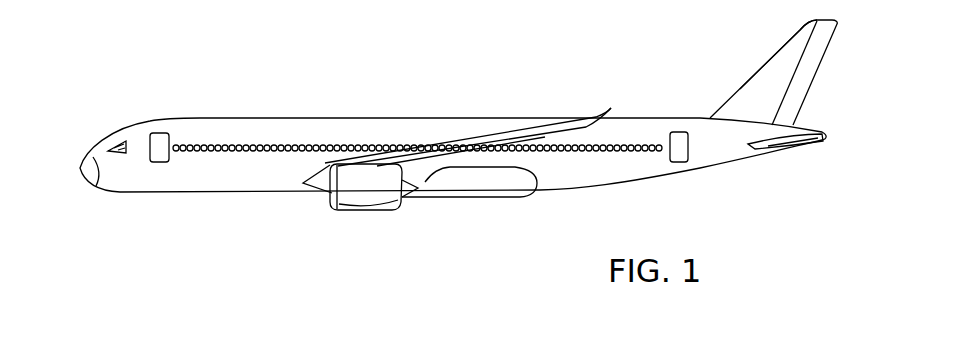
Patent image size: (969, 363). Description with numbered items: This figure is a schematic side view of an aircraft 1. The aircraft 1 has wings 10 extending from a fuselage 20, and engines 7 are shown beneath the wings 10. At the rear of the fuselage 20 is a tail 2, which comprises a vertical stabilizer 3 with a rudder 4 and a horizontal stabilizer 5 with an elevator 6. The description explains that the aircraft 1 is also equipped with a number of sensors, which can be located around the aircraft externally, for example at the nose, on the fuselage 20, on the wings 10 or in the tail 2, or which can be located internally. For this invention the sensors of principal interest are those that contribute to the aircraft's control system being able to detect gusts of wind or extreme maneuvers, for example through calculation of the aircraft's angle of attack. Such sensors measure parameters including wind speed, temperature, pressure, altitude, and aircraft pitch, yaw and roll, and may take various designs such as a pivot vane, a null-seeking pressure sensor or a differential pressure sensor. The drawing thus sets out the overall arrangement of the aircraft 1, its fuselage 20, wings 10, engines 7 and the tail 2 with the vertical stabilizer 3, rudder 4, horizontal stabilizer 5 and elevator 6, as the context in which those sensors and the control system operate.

The aircraft 1 is at (233, 117).
The tail 2 is at (765, 62).
The vertical stabilizer 3 is at (790, 42).
The rudder 4 is at (803, 77).
The horizontal stabilizer 5 is at (78, 167).
The elevator 6 is at (800, 148).
The engines 7 is at (367, 199).
The wings 10 is at (517, 165).
The fuselage 20 is at (401, 127).